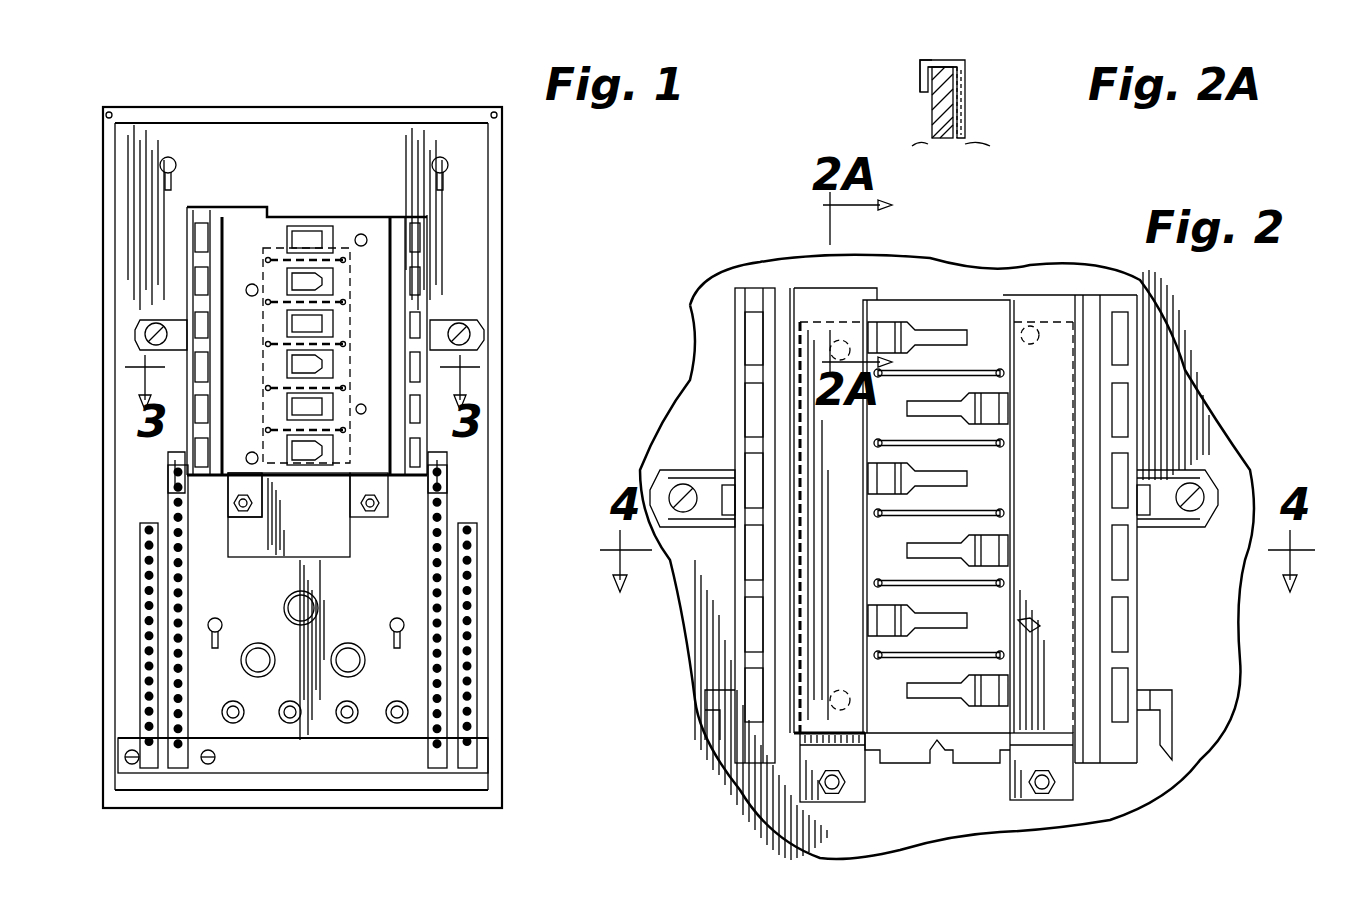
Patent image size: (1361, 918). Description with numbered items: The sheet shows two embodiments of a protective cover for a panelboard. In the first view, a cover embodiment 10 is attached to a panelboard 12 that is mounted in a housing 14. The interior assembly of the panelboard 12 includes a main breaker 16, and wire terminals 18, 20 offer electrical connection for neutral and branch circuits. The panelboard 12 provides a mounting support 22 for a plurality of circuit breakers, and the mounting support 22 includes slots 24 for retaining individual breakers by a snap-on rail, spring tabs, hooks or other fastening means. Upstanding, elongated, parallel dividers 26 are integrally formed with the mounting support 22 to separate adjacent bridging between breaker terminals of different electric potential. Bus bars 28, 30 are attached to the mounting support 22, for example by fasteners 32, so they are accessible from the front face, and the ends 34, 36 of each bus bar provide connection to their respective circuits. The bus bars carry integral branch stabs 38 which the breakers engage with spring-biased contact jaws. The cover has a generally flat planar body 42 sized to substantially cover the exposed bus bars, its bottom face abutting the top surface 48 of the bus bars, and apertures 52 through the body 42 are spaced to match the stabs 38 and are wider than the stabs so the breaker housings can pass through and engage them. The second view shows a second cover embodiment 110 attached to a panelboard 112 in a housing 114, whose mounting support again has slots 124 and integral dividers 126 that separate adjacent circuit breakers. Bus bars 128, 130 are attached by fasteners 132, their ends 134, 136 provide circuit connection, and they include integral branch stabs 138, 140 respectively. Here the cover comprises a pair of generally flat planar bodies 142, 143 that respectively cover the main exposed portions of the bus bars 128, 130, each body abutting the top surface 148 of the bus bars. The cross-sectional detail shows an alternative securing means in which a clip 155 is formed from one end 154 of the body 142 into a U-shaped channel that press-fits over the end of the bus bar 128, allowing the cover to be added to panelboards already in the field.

In FIG. 1, the cover embodiment 10 is at (370, 292).
In FIG. 1, the panelboard 12 is at (452, 325).
In FIG. 1, the housing 14 is at (135, 196).
In FIG. 1, the main breaker 16 is at (330, 545).
In FIG. 1, the wire terminal 18 is at (437, 770).
In FIG. 1, the wire terminal 20 is at (470, 752).
In FIG. 1, the mounting support 22 is at (220, 270).
In FIG. 1, the slots 24 is at (200, 301).
In FIG. 1, the dividers 26 is at (343, 258).
In FIG. 1, the bus bar 28 is at (232, 487).
In FIG. 1, the bus bar 30 is at (382, 490).
In FIG. 1, the fasteners 32 is at (362, 403).
In FIG. 1, the bus bar end 34 is at (243, 512).
In FIG. 1, the bus bar end 36 is at (371, 513).
In FIG. 1, the branch stab portion 38 is at (305, 408).
In FIG. 1, the body 42 is at (250, 238).
In FIG. 1, the top surface of bus bars 48 is at (236, 505).
In FIG. 1, the apertures 52 is at (322, 228).
In FIG. 2, the cover embodiment 110 is at (1060, 360).
In FIG. 2, the panelboard 112 is at (1196, 482).
In FIG. 2, the housing 114 is at (675, 448).
In FIG. 2, the slots 124 is at (752, 415).
In FIG. 2, the dividers 126 is at (1010, 443).
In FIG. 2A, the bus bar 128 is at (940, 138).
In FIG. 2, the bus bar 128 is at (810, 735).
In FIG. 2, the bus bar 130 is at (1068, 768).
In FIG. 2, the fasteners 132 is at (1040, 626).
In FIG. 2, the bus bar end 134 is at (835, 796).
In FIG. 2, the bus bar end 136 is at (1045, 796).
In FIG. 2, the branch stab portion 138 is at (948, 692).
In FIG. 2, the branch stab portion 140 is at (890, 612).
In FIG. 2A, the body 142 is at (962, 95).
In FIG. 2, the body 142 is at (800, 300).
In FIG. 2, the body 143 is at (1047, 300).
In FIG. 2, the top surface of bus bars 148 is at (853, 768).
In FIG. 2A, the body end 154 is at (962, 62).
In FIG. 2, the body end 154 is at (840, 305).
In FIG. 2A, the clip 155 is at (935, 58).